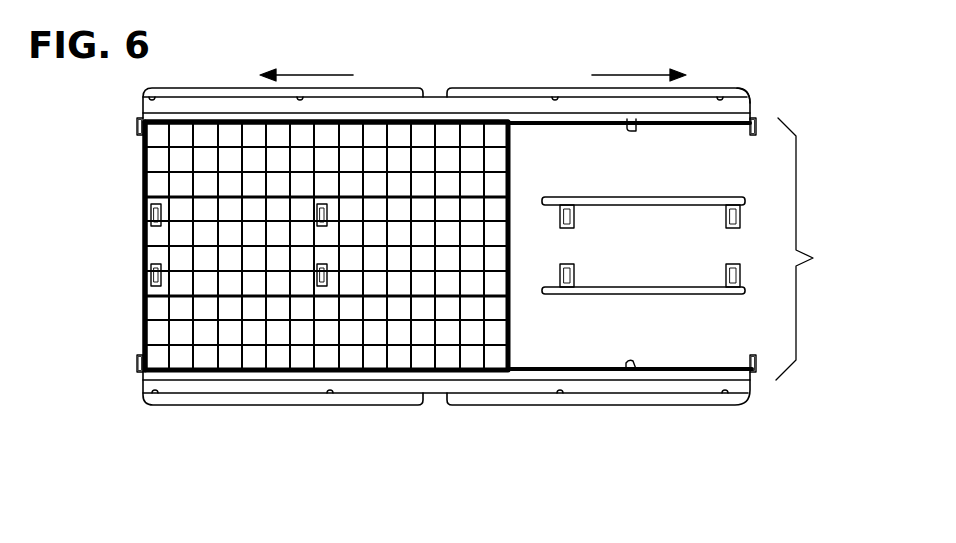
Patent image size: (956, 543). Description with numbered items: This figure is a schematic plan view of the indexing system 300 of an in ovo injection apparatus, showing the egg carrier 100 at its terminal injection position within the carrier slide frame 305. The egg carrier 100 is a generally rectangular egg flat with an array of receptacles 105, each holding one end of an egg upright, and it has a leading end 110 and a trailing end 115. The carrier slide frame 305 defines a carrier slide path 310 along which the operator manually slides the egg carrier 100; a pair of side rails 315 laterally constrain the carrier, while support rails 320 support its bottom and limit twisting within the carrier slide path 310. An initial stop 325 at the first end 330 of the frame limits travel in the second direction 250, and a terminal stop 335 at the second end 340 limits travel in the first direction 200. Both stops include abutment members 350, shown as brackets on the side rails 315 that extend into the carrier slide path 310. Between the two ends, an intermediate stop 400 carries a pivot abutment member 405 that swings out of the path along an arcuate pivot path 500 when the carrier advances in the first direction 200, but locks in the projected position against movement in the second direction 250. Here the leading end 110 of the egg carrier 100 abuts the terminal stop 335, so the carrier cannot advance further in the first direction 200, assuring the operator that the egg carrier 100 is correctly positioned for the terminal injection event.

The egg carrier 100 is at (222, 140).
The receptacles 105 is at (160, 128).
The leading end 110 is at (143, 315).
The trailing end 115 is at (512, 236).
The first direction 200 is at (315, 74).
The second direction 250 is at (628, 74).
The indexing system 300 is at (465, 225).
The carrier slide frame 305 is at (818, 249).
The carrier slide path 310 is at (720, 322).
The side rails 315 is at (508, 104).
The support rails 320 is at (641, 205).
The initial stop 325 is at (770, 107).
The first end 330 is at (772, 240).
The terminal stop 335 is at (115, 139).
The second end 340 is at (120, 243).
The abutment members 350 is at (137, 124).
The intermediate stop 400 is at (615, 150).
The pivot abutment member 405 is at (637, 128).
The arcuate pivot path 500 is at (598, 355).